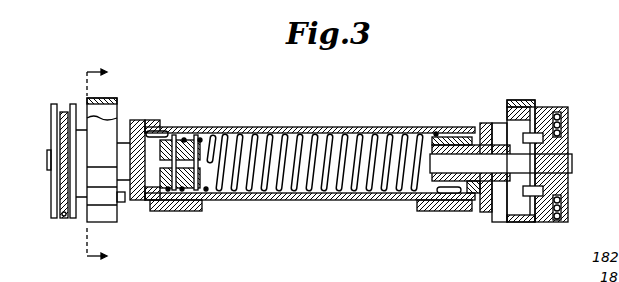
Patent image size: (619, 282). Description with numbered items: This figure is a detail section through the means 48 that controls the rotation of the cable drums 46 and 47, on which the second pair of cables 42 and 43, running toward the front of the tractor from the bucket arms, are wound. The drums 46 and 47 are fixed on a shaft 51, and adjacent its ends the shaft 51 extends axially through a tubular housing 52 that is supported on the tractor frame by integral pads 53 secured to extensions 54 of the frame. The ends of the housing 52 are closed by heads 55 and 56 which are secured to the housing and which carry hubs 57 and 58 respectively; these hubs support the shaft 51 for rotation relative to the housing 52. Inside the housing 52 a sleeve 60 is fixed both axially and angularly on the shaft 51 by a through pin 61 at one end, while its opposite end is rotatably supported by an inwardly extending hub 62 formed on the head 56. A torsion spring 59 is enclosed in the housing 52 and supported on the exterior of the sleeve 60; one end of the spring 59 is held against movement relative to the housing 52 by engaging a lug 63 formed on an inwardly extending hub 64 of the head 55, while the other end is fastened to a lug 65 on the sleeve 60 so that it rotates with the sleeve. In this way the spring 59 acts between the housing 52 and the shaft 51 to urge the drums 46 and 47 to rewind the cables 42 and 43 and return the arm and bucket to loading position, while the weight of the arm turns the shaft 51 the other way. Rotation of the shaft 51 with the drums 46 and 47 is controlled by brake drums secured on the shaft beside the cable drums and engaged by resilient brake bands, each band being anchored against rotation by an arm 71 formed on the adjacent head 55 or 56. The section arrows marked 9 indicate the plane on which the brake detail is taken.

The section line 9 is at (95, 165).
The cable 42 is at (63, 216).
The cable 43 is at (556, 220).
The drum 46 is at (57, 110).
The drum 47 is at (568, 118).
The means for controlling rotation of the drums 48 is at (390, 107).
The shaft 51 is at (573, 163).
The tubular housing 52 is at (428, 128).
The integral pads 53 is at (210, 200).
The frame extensions 54 is at (184, 208).
The head 55 is at (138, 126).
The head 56 is at (487, 123).
The hub 57 is at (128, 152).
The hub 58 is at (499, 186).
The torsion spring 59 is at (312, 136).
The sleeve 60 is at (343, 186).
The through pin 61 is at (213, 133).
The inwardly extending hub 62 is at (452, 144).
The lug 63 is at (162, 132).
The inwardly extending hub 64 is at (143, 192).
The lug 65 is at (462, 206).
The arm 71 is at (122, 203).